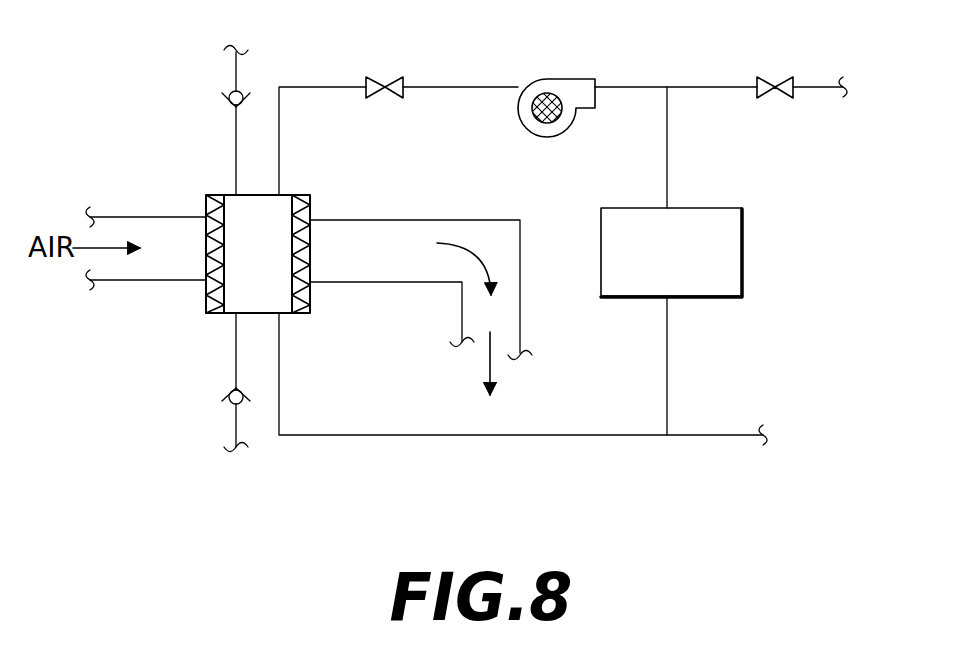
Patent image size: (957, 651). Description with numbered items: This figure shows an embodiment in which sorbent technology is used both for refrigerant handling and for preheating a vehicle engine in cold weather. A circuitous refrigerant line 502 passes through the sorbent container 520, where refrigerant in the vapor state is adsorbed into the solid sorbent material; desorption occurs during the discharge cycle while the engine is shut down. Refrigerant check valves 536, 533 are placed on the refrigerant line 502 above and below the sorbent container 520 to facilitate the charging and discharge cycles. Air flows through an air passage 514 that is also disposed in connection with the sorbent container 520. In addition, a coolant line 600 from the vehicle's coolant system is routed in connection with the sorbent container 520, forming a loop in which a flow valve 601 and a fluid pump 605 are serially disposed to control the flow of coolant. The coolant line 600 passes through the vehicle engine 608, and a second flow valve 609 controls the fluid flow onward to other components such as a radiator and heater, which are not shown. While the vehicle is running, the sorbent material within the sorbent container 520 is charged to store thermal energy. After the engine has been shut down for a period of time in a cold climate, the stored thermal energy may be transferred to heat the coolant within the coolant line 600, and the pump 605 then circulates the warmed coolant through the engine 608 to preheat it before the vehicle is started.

The refrigerant line 502 is at (235, 158).
The air passage 514 is at (522, 305).
The sorbent container 520 is at (213, 320).
The refrigerant check valve 533 is at (228, 403).
The refrigerant check valve 536 is at (246, 92).
The coolant line 600 is at (382, 435).
The flow valve 601 is at (384, 82).
The fluid pump 605 is at (566, 78).
The vehicle engine 608 is at (703, 208).
The second flow valve 609 is at (761, 80).